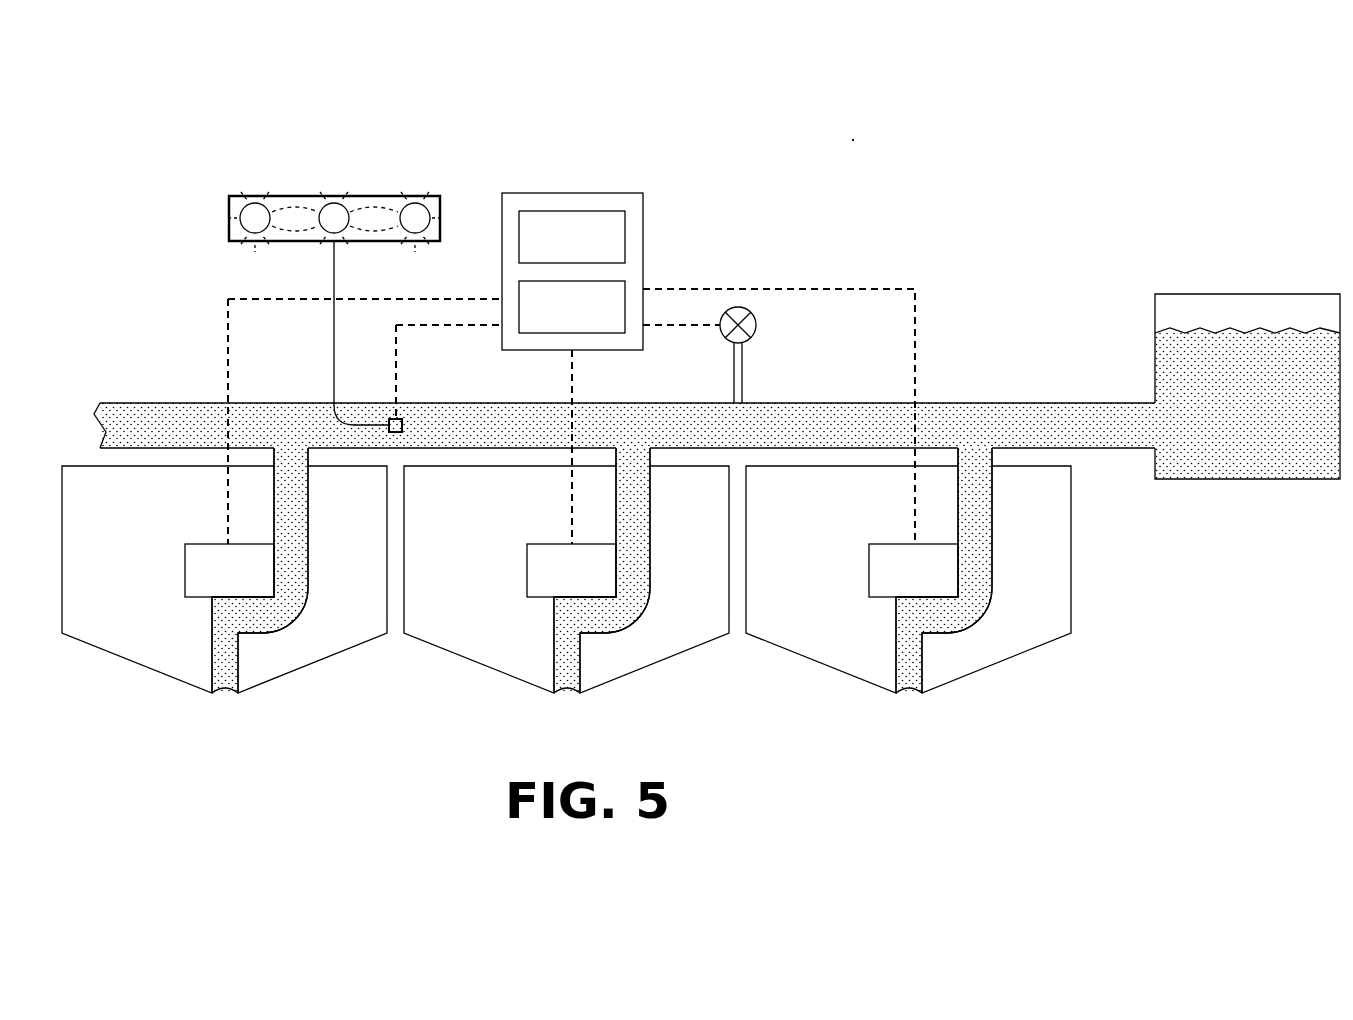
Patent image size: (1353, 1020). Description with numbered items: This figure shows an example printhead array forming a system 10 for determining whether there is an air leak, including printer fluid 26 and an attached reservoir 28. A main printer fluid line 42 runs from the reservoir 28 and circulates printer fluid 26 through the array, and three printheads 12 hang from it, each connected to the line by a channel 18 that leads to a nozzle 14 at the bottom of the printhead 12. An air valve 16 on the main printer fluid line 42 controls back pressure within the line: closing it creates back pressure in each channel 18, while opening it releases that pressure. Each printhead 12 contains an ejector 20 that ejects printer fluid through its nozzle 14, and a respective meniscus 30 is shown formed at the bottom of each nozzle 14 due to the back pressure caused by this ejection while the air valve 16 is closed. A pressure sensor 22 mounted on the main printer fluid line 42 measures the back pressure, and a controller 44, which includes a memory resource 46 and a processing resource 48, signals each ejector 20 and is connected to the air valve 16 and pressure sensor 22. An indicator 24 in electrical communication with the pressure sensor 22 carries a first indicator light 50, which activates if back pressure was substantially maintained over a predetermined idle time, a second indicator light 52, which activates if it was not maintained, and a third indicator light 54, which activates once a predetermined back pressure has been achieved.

The system 10 is at (853, 140).
The printhead 12 is at (566, 600).
The nozzle 14 is at (140, 665).
The air valve 16 is at (757, 325).
The channel 18 is at (300, 617).
The ejector 20 is at (244, 582).
The pressure sensor 22 is at (400, 419).
The indicator 24 is at (229, 218).
The printer fluid 26 is at (1300, 332).
The reservoir 28 is at (1250, 294).
The meniscus 30 is at (225, 695).
The main printer fluid line 42 is at (977, 403).
The controller 44 is at (572, 193).
The memory resource 46 is at (586, 320).
The processing resource 48 is at (586, 250).
The first indicator light 50 is at (255, 196).
The second indicator light 52 is at (334, 196).
The third indicator light 54 is at (415, 196).